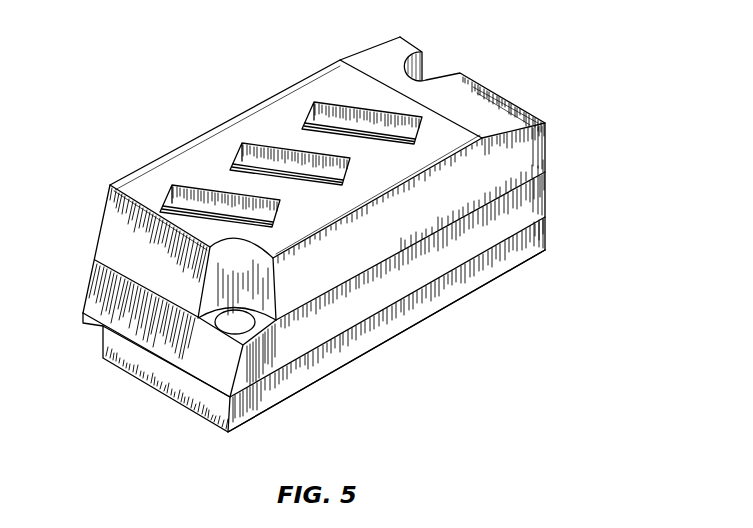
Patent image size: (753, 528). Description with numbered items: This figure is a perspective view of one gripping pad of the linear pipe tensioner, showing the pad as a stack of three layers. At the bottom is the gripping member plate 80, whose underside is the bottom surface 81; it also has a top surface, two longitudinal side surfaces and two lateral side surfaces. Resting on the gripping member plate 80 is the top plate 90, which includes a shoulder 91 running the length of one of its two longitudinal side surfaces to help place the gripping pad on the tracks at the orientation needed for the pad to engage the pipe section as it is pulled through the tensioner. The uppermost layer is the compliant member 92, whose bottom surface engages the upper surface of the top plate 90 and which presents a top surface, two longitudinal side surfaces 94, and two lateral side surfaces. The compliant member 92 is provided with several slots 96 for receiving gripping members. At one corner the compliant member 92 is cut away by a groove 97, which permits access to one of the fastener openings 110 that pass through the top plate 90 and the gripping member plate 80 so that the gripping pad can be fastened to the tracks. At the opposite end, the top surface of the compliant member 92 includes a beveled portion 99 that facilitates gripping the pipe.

The gripping member plate 80 is at (549, 232).
The bottom surface 81 is at (400, 337).
The top plate 90 is at (549, 190).
The shoulder 91 is at (92, 336).
The compliant member 92 is at (549, 143).
The longitudinal side surfaces 94 is at (362, 249).
The slots 96 is at (222, 207).
The groove 97 is at (258, 290).
The beveled portion 99 is at (465, 93).
The fastener openings 110 is at (231, 322).